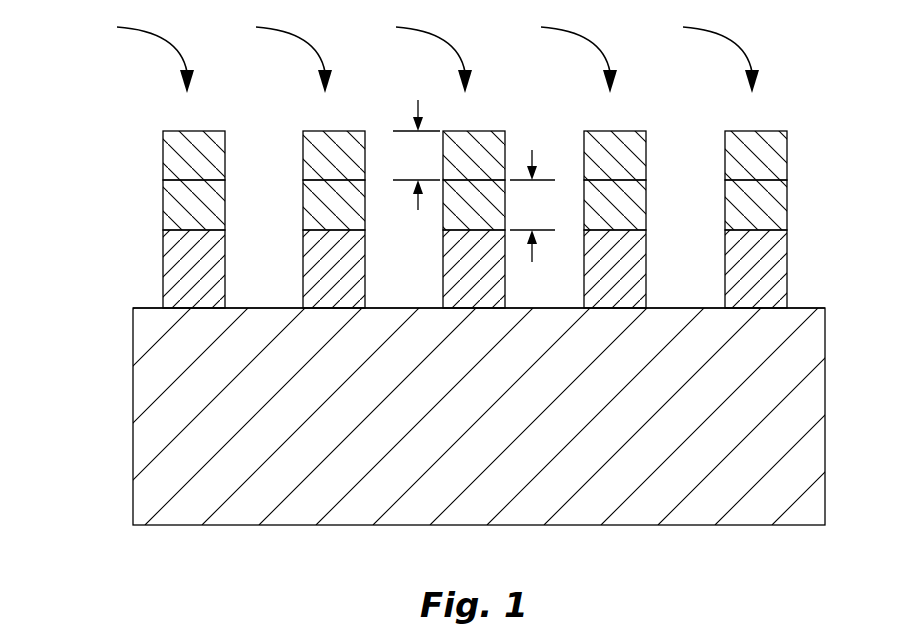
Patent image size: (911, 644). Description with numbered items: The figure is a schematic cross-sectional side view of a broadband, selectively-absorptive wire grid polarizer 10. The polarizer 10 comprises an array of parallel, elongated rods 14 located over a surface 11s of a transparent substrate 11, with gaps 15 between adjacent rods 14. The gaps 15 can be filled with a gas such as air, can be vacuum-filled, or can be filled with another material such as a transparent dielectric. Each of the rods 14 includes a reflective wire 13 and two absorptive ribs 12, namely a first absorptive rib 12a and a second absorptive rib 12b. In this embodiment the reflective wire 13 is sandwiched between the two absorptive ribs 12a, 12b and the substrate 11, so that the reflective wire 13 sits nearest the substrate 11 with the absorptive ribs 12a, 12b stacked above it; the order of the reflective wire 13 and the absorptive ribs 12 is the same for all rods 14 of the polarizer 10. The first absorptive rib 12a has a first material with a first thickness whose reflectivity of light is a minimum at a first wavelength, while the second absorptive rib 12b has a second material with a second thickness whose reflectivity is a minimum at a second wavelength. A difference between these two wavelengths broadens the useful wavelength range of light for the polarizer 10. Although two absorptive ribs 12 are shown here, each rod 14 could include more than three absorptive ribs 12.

The selectively-absorptive wire grid polarizer 10 is at (50, 454).
The substrate 11 is at (501, 425).
The surface of the substrate 11s is at (808, 307).
The absorptive ribs 12 is at (455, 150).
The first absorptive rib 12a is at (137, 213).
The second absorptive rib 12b is at (432, 141).
The reflective wire 13 is at (137, 275).
The rods 14 is at (420, 53).
The gaps 15 is at (473, 215).